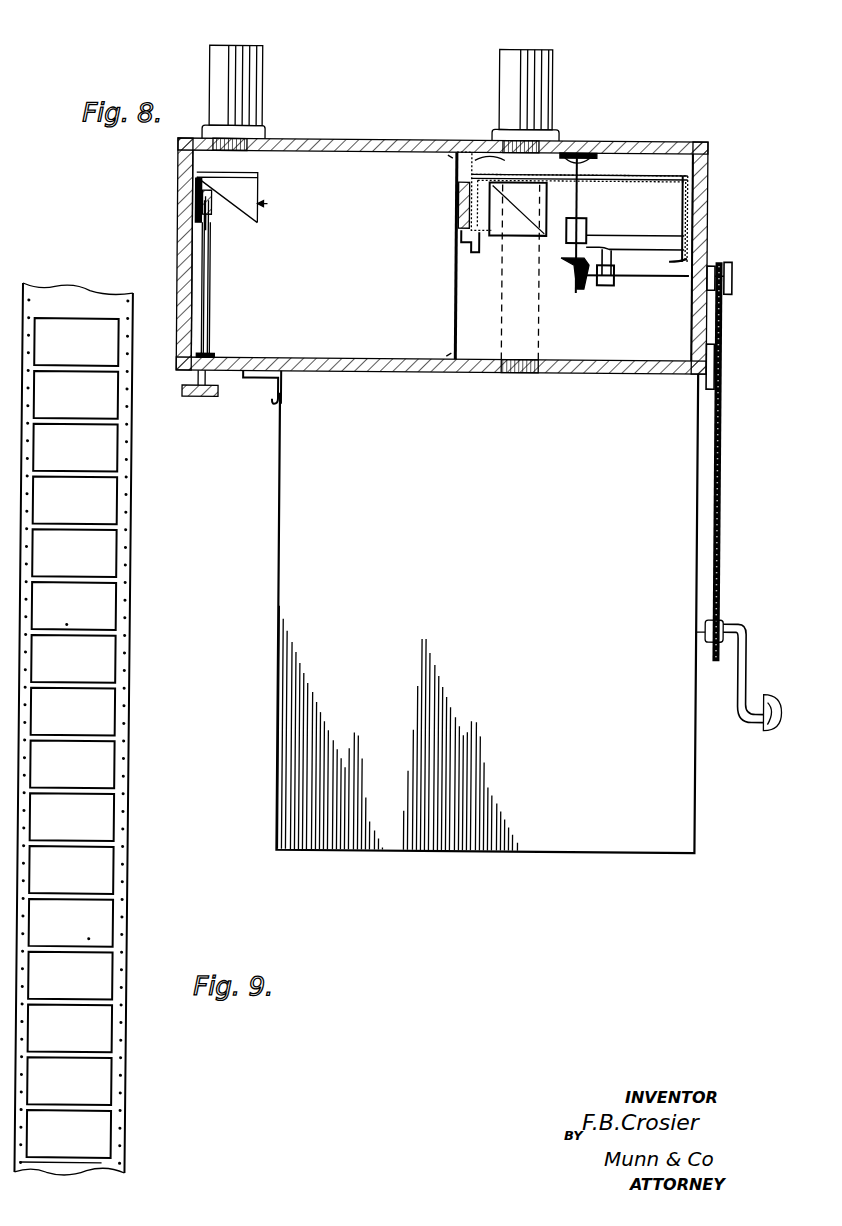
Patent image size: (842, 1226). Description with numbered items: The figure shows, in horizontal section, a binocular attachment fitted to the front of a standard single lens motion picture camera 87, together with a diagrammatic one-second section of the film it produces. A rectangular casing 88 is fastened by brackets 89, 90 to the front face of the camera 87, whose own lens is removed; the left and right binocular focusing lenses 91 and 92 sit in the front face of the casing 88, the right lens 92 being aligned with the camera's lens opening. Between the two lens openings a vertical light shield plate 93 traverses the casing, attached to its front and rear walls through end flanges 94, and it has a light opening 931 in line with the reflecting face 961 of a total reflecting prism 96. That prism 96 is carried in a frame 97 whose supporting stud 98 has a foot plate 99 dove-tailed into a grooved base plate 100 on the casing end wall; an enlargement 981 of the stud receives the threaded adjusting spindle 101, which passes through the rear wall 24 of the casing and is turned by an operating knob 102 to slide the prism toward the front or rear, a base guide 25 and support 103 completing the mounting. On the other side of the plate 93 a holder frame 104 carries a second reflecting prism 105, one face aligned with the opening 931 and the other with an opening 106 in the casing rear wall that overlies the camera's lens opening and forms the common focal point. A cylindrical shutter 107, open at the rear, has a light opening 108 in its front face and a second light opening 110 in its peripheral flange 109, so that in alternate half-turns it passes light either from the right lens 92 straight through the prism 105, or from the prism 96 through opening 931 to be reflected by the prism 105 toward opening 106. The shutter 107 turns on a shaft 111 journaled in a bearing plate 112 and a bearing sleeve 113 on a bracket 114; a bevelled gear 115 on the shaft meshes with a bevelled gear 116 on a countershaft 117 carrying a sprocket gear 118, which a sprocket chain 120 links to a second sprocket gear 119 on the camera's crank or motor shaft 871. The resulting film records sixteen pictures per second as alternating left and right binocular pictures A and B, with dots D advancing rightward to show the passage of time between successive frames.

In FIG. 8, the casing wall 24 is at (190, 230).
In FIG. 8, the rod 25 is at (209, 288).
In FIG. 8, the standard motion picture camera 87 is at (487, 612).
In FIG. 8, the operating crank or motor shaft 871 is at (708, 627).
In FIG. 8, the casing 88 is at (348, 148).
In FIG. 8, the bracket 89 is at (278, 380).
In FIG. 8, the bracket 90 is at (716, 382).
In FIG. 8, the left binocular focusing lens 91 is at (247, 98).
In FIG. 8, the right binocular focusing lens 92 is at (500, 66).
In FIG. 8, the vertical light shield plate 93 is at (440, 255).
In FIG. 8, the light opening 931 is at (458, 197).
In FIG. 8, the end flange 94 is at (452, 156).
In FIG. 8, the total reflecting prism 96 is at (258, 181).
In FIG. 8, the reflecting face 961 is at (284, 204).
In FIG. 8, the frame 97 is at (235, 221).
In FIG. 8, the supporting stud 98 is at (212, 206).
In FIG. 8, the enlargement 981 is at (209, 228).
In FIG. 8, the foot plate 99 is at (196, 192).
In FIG. 8, the base plate 100 is at (193, 215).
In FIG. 8, the adjusting spindle 101 is at (211, 320).
In FIG. 8, the operating knob 102 is at (204, 390).
In FIG. 8, the support 103 is at (498, 240).
In FIG. 8, the holder frame 104 is at (510, 236).
In FIG. 8, the second reflecting prism 105 is at (505, 236).
In FIG. 8, the opening 106 is at (530, 370).
In FIG. 8, the cylindrical shutter 107 is at (660, 158).
In FIG. 8, the light opening 108 is at (515, 158).
In FIG. 8, the peripheral flange 109 is at (470, 212).
In FIG. 8, the second light opening 110 is at (690, 200).
In FIG. 8, the shaft 111 is at (580, 190).
In FIG. 8, the bearing plate 112 is at (580, 150).
In FIG. 8, the bearing sleeve 113 is at (588, 222).
In FIG. 8, the bracket 114 is at (630, 246).
In FIG. 8, the bevelled gear 115 is at (578, 268).
In FIG. 8, the bevelled gear 116 is at (608, 282).
In FIG. 8, the countershaft 117 is at (655, 270).
In FIG. 8, the sprocket gear 118 is at (733, 262).
In FIG. 8, the second sprocket gear 119 is at (727, 620).
In FIG. 8, the sprocket chain 120 is at (724, 488).
In FIG. 9, the left binocular picture A is at (73, 711).
In FIG. 9, the right binocular picture B is at (73, 764).
In FIG. 9, the dots D is at (70, 624).